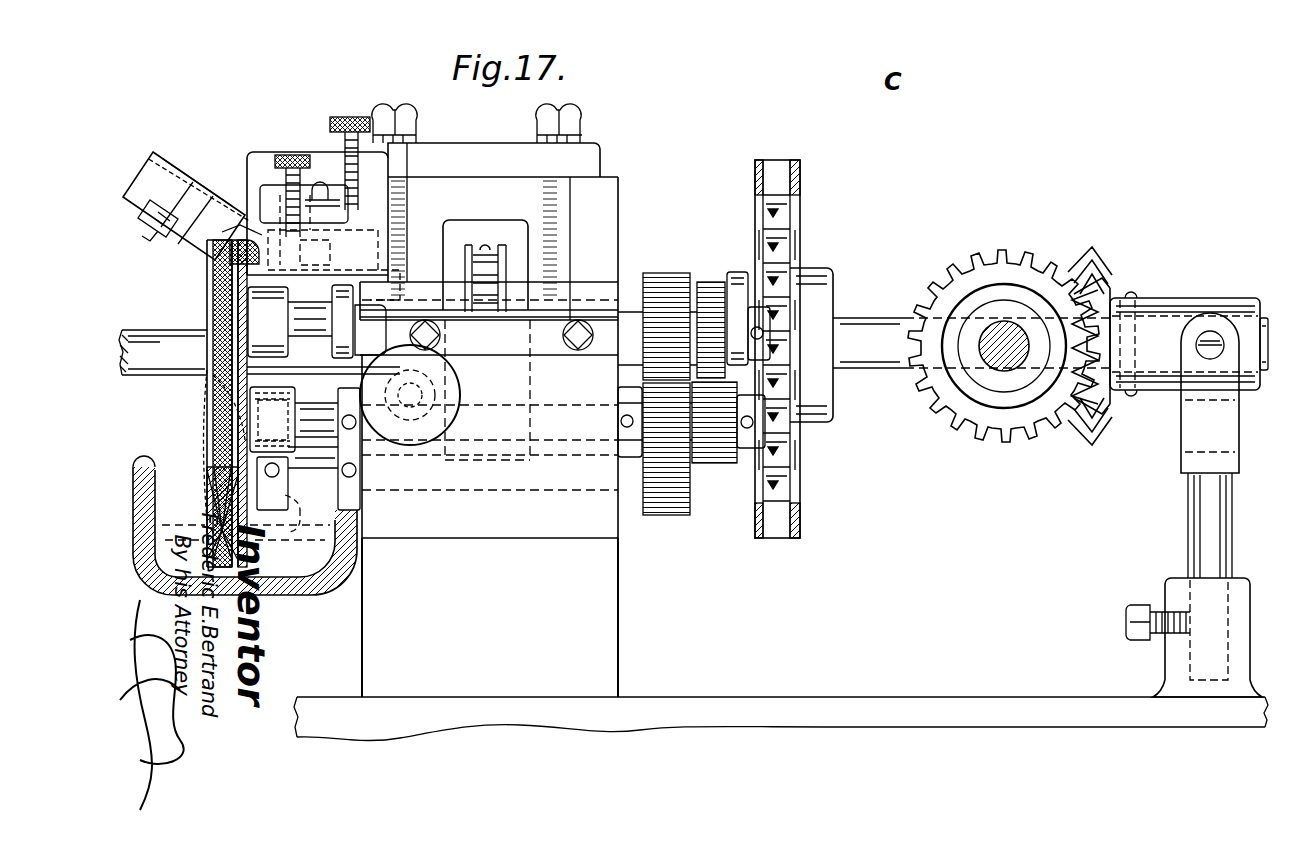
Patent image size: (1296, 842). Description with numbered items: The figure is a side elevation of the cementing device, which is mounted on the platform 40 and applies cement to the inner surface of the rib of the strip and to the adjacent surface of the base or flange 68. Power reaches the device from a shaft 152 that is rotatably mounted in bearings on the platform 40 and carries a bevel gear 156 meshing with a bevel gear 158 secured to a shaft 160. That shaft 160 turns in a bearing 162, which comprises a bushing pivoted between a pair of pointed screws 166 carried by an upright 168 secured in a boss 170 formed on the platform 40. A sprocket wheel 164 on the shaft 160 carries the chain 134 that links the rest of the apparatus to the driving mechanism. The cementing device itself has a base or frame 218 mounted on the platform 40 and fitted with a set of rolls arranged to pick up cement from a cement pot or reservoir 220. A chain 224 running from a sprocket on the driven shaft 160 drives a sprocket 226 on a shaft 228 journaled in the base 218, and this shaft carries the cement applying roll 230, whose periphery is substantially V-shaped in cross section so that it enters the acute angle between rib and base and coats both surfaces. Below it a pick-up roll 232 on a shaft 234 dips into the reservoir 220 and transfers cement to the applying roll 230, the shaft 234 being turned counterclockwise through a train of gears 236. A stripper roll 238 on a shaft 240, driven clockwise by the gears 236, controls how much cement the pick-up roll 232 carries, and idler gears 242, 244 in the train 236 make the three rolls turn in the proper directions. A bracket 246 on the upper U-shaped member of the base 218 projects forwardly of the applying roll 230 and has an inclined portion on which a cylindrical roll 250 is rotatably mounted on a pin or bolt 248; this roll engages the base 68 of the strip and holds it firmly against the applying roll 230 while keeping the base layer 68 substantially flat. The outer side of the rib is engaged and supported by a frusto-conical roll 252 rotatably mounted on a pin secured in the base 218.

The platform 40 is at (935, 697).
The base or flange of the strip 68 is at (212, 262).
The chain 134 is at (800, 192).
The shaft 152 is at (985, 365).
The bevel gear 156 is at (1000, 248).
The bevel gear 158 is at (1108, 278).
The shaft 160 is at (150, 333).
The bearing 162 is at (1212, 306).
The sprocket wheel 164 is at (778, 240).
The pointed screws 166 is at (1196, 352).
The upright 168 is at (1186, 522).
The boss 170 is at (1165, 648).
The base or frame 218 is at (618, 606).
The cement pot or reservoir 220 is at (136, 542).
The chain 224 is at (510, 250).
The sprocket 226 is at (484, 250).
The shaft 228 is at (308, 333).
The cement applying roll 230 is at (212, 318).
The pick-up roll 232 is at (222, 490).
The shaft 234 is at (305, 492).
The train of gears 236 is at (675, 258).
The stripper roll 238 is at (218, 412).
The shaft 240 is at (310, 408).
The idler gear 242 is at (667, 393).
The idler gear 244 is at (712, 283).
The bracket 246 is at (456, 148).
The pin or bolt 248 is at (163, 178).
The cylindrical roll 250 is at (150, 203).
The frusto-conical roll 252 is at (257, 237).